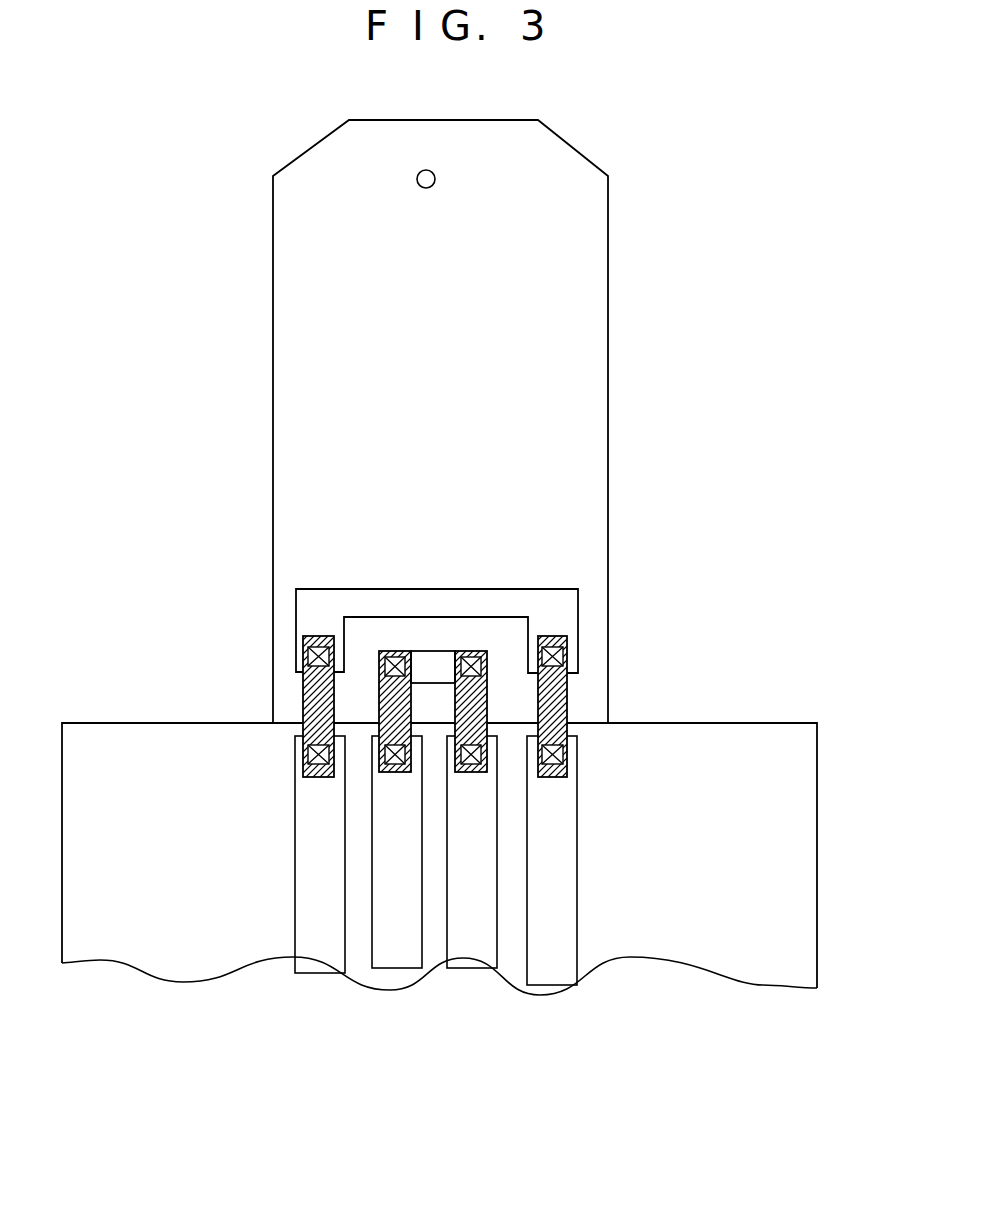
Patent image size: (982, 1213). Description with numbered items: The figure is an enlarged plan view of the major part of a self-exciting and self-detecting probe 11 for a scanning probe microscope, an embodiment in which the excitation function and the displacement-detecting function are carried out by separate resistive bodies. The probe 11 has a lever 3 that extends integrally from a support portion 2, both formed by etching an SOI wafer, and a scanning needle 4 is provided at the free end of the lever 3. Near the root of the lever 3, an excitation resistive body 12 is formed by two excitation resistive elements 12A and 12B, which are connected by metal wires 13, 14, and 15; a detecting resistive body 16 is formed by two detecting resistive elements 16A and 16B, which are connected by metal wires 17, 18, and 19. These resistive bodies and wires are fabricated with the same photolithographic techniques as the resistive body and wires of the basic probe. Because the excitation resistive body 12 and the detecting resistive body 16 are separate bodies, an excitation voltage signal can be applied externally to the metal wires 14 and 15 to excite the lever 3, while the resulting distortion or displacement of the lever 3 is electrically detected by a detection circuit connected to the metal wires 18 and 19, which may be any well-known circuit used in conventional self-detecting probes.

The support portion 2 is at (793, 825).
The lever 3 is at (595, 282).
The scanning needle 4 is at (426, 170).
The probe 11 is at (840, 123).
The excitation resistive body 12 is at (193, 476).
The excitation resistive element 12A is at (303, 697).
The excitation resistive element 12B is at (537, 682).
The metal wire 13 is at (455, 597).
The metal wire 14 is at (318, 947).
The metal wire 15 is at (553, 955).
The detecting resistive body 16 is at (710, 423).
The detecting resistive element 16A is at (413, 684).
The detecting resistive element 16B is at (487, 697).
The metal wire 17 is at (437, 675).
The metal wire 18 is at (400, 947).
The metal wire 19 is at (473, 945).